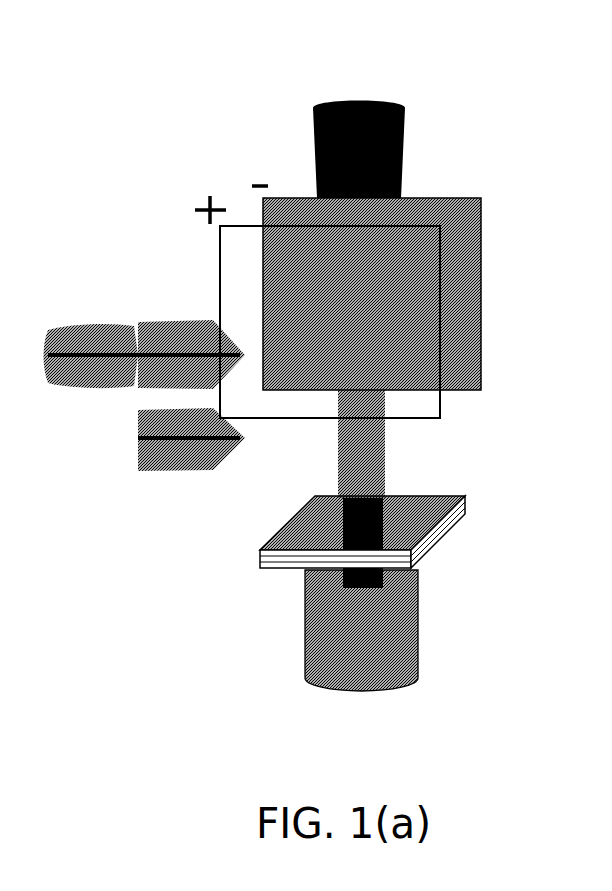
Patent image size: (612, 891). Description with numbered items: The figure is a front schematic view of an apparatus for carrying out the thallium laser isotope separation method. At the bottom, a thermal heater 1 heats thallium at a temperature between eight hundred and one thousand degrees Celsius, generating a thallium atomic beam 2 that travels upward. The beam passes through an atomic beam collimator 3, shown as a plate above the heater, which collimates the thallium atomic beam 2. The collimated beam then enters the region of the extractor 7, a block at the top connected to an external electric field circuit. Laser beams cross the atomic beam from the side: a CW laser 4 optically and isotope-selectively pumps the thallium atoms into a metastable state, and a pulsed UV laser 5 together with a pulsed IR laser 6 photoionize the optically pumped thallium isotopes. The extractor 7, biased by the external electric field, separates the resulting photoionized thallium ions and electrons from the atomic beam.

The thermal heater 1 is at (412, 633).
The thallium atomic beam 2 is at (370, 448).
The atomic beam collimator 3 is at (443, 515).
The CW laser 4 is at (172, 439).
The pulsed UV laser 5 is at (91, 338).
The pulsed IR laser 6 is at (191, 338).
The extractor 7 is at (474, 249).